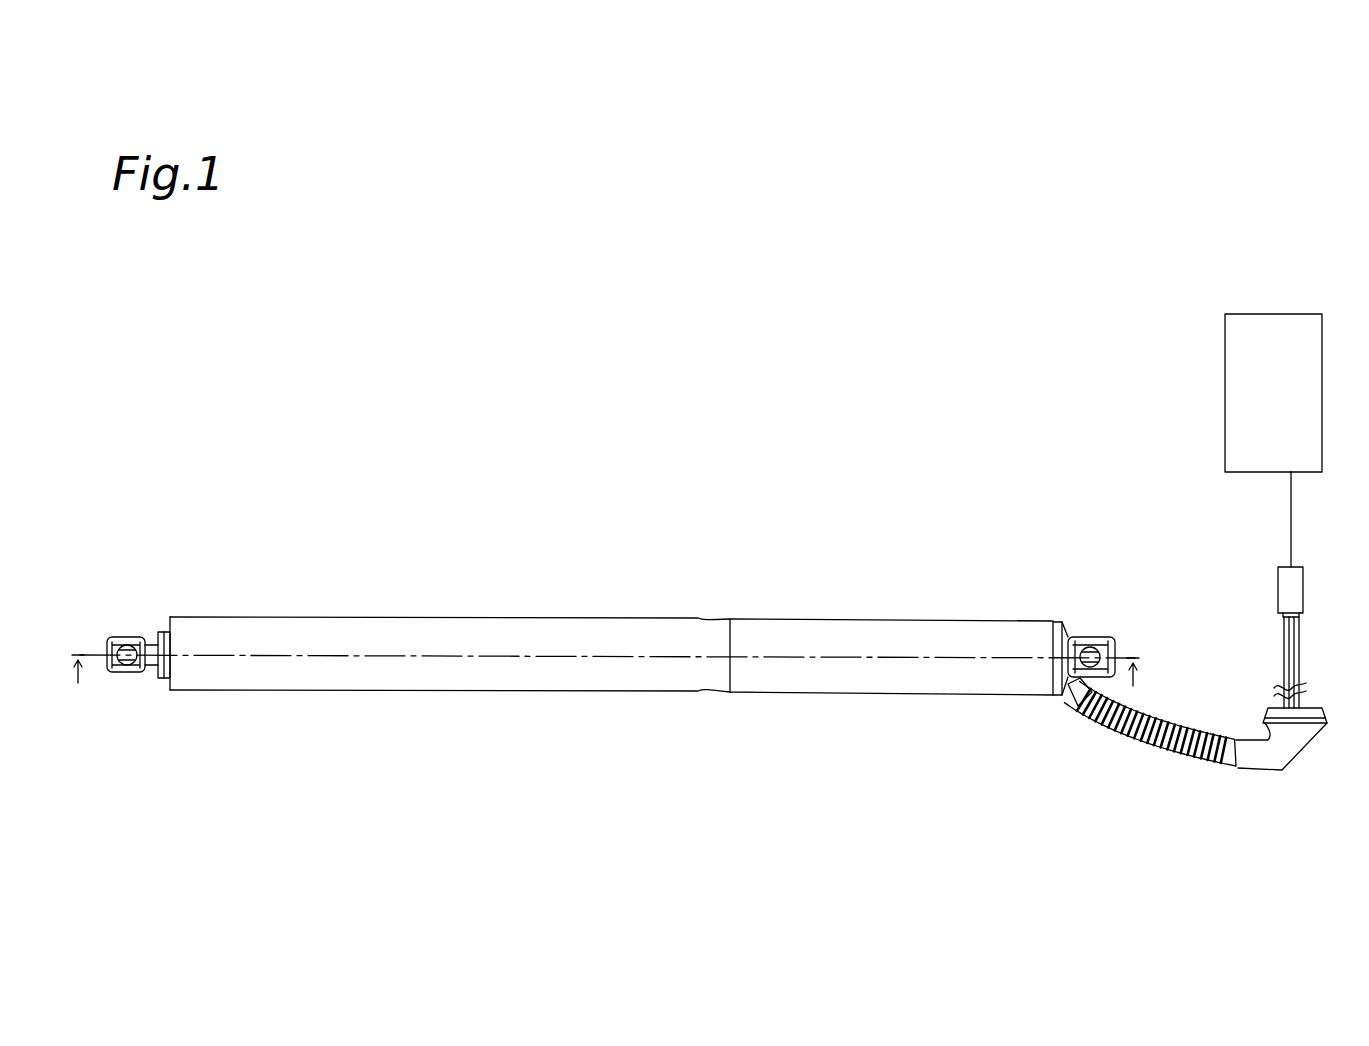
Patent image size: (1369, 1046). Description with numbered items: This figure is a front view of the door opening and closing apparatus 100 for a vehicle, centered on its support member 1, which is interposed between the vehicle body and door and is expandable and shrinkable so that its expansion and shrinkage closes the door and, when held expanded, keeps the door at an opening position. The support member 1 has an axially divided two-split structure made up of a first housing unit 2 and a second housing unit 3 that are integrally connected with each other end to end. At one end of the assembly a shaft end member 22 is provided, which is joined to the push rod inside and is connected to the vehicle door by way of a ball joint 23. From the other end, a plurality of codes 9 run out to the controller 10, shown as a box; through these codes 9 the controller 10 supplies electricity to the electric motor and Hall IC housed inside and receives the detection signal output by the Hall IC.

The door opening and closing apparatus 100 is at (1078, 330).
The support member 1 is at (700, 583).
The first housing unit 2 is at (904, 695).
The second housing unit 3 is at (355, 692).
The codes 9 is at (1284, 652).
The controller 10 is at (1225, 374).
The shaft end member 22 is at (135, 634).
The ball joint 23 is at (133, 672).